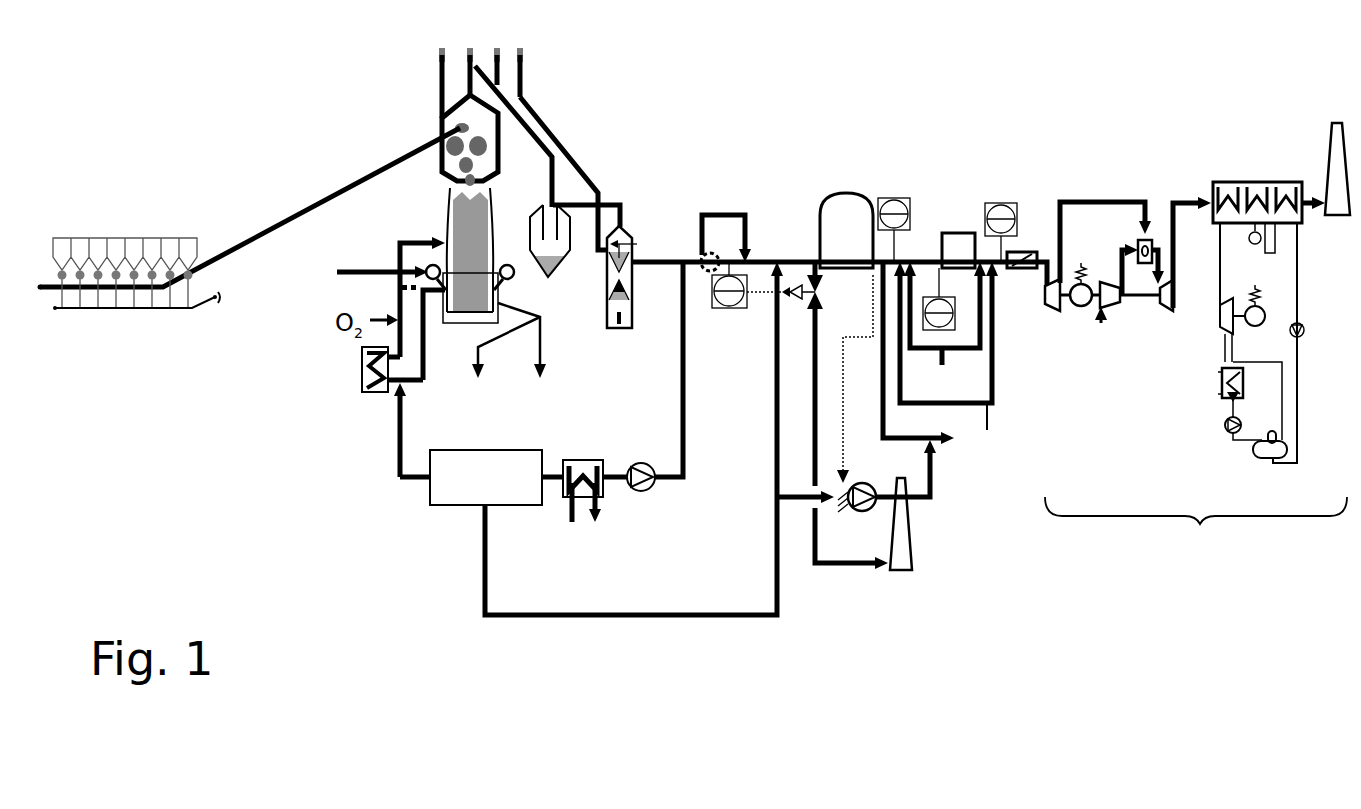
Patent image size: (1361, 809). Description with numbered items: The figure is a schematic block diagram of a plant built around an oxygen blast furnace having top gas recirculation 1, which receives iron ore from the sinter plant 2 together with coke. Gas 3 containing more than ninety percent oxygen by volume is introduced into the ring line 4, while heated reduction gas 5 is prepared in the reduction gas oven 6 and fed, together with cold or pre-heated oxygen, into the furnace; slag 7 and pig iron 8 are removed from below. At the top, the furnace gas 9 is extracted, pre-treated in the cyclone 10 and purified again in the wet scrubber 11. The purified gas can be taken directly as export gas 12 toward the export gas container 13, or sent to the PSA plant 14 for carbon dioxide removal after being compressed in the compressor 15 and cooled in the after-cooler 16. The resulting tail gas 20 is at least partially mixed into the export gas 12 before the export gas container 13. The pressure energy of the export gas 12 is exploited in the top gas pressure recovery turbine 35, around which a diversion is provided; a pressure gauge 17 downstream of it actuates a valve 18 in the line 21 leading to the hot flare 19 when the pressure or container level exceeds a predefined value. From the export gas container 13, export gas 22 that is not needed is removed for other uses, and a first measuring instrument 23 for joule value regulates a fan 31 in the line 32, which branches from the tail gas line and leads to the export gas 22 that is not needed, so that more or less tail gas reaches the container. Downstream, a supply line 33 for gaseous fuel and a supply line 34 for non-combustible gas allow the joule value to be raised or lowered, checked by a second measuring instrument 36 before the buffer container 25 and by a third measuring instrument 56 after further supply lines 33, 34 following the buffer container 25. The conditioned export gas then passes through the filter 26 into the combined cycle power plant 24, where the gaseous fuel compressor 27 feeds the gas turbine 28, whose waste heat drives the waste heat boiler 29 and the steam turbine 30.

The oxygen blast furnace having top gas recirculation 1 is at (463, 225).
The sinter plant 2 is at (118, 233).
The gas 3 is at (371, 270).
The ring line 4 is at (511, 280).
The heated reduction gas 5 is at (405, 289).
The reduction gas oven 6 is at (360, 362).
The slag 7 is at (504, 363).
The pig iron 8 is at (523, 356).
The top gas or furnace gas 9 is at (545, 152).
The dust separator or cyclone 10 is at (553, 262).
The wet scrubber 11 is at (621, 328).
The export gas 12 is at (768, 262).
The export gas container 13 is at (846, 338).
The PSA plant 14 is at (481, 477).
The compressor 15 is at (652, 490).
The after-cooler 16 is at (585, 460).
The pressure gauge 17 is at (724, 310).
The valve 18 is at (805, 308).
The hot flare 19 is at (912, 568).
The tail gas 20 is at (478, 612).
The line for the export gas to the hot flare 21 is at (856, 568).
The export gas that is not needed 22 is at (956, 440).
The first measuring instrument for measuring joule value 23 is at (894, 196).
The combined cycle power plant 24 is at (1196, 527).
The buffer container 25 is at (957, 231).
The filter 26 is at (1028, 250).
The gaseous fuel compressor 27 is at (1055, 306).
The gas turbine 28 is at (1106, 280).
The waste heat boiler 29 is at (1281, 188).
The steam turbine 30 is at (1235, 307).
The fan 31 is at (860, 511).
The line for tail gas 32 is at (802, 500).
The supply line for gaseous fuel 33 is at (945, 328).
The supply line for non-combustible gas 34 is at (990, 420).
The top gas pressure recovery turbine 35 is at (715, 252).
The second measuring instrument for measuring joule value 36 is at (957, 312).
The third measuring instrument for measuring joule value 56 is at (1001, 201).